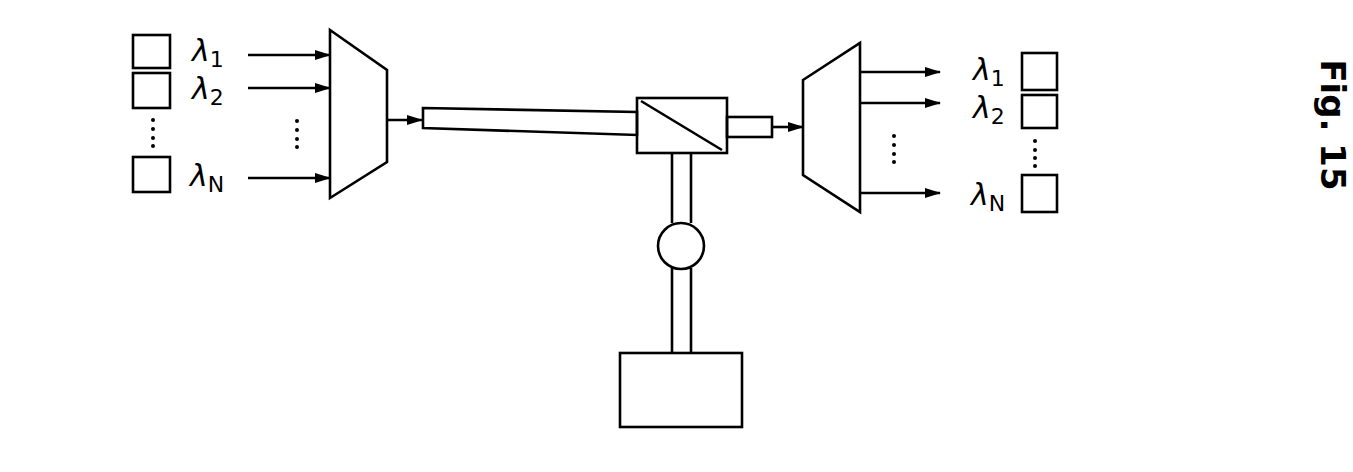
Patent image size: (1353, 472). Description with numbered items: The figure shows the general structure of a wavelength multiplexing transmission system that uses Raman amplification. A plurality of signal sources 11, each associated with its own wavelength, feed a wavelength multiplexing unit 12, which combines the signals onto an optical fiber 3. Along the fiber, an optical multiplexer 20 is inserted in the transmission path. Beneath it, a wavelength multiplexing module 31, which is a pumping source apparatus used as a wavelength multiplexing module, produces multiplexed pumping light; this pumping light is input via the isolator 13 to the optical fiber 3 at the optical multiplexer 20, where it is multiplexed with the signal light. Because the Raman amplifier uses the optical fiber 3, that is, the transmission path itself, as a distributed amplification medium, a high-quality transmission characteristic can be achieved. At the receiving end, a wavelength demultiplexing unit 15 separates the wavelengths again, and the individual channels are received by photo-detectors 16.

The signal sources 11 is at (133, 45).
The wavelength multiplexing unit 12 is at (357, 182).
The optical fiber 3 is at (472, 118).
The optical multiplexer 20 is at (690, 107).
The isolator 13 is at (693, 244).
The wavelength multiplexing module 31 is at (681, 390).
The wavelength demultiplexing unit 15 is at (827, 195).
The photo-detectors 16 is at (1057, 70).